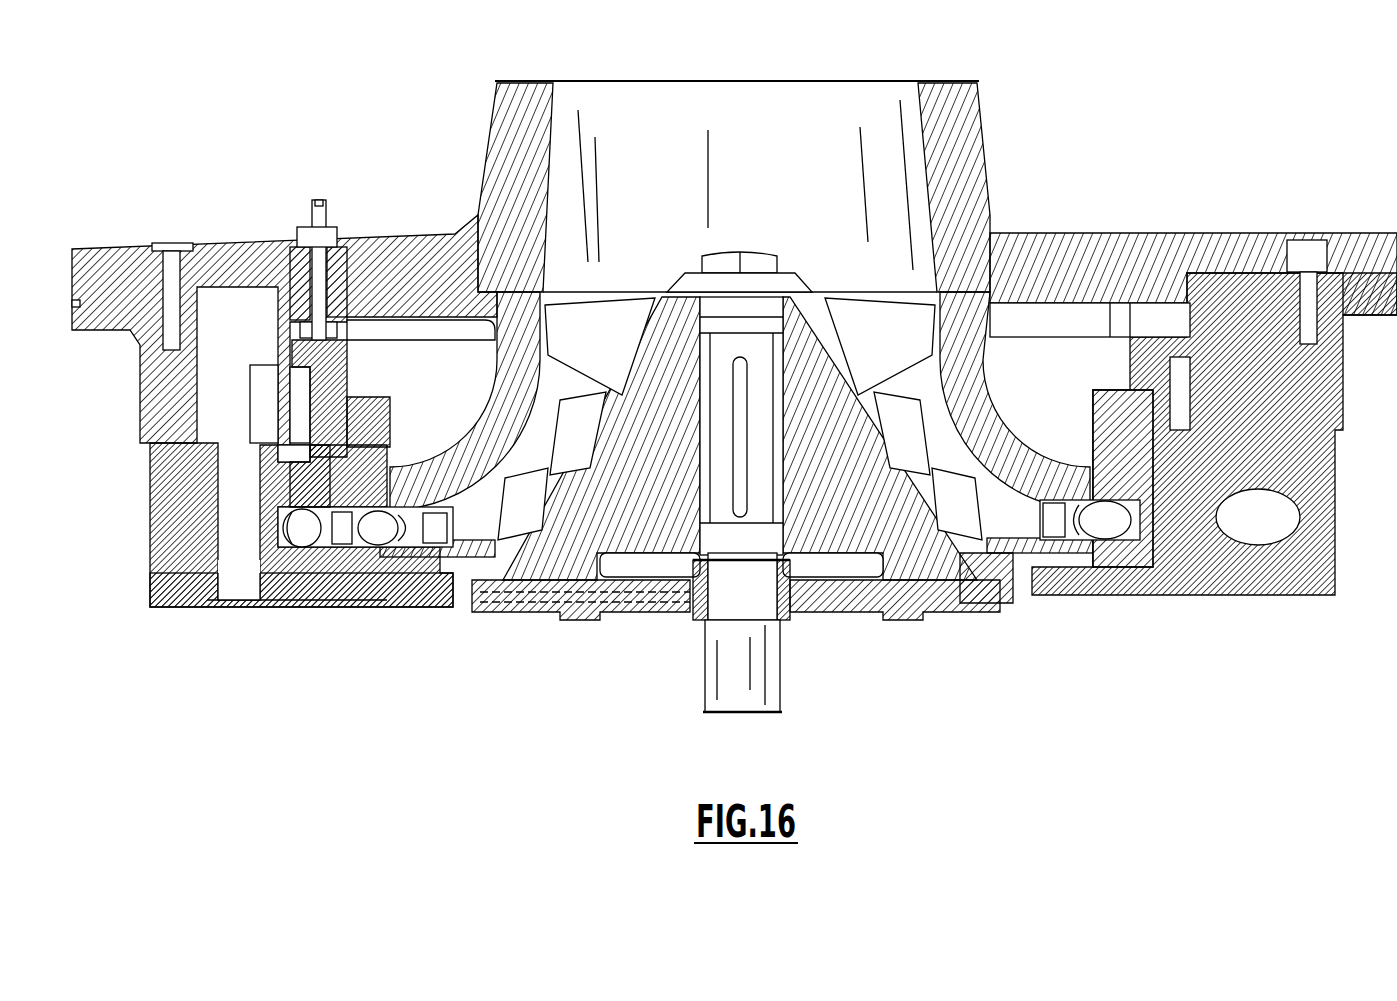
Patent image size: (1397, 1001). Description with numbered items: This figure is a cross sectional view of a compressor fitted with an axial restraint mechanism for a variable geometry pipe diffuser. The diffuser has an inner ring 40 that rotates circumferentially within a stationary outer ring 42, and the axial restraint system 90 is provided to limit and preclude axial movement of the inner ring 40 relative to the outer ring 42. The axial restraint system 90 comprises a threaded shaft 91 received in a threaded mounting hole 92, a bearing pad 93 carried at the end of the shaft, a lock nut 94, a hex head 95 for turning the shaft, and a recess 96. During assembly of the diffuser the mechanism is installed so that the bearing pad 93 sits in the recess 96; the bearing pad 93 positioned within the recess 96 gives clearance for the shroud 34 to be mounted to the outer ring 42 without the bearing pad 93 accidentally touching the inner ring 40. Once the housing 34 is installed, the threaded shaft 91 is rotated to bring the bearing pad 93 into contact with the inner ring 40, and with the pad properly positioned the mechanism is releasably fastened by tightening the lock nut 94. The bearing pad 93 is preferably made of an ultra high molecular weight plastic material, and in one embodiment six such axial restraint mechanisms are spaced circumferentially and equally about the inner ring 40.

The shroud 34 is at (990, 233).
The inner ring 40 is at (300, 467).
The outer ring 42 is at (290, 593).
The axial restraint system 90 is at (299, 239).
The threaded shaft 91 is at (318, 290).
The threaded mounting hole 92 is at (335, 258).
The bearing pad 93 is at (306, 337).
The lock nut 94 is at (300, 228).
The hex head 95 is at (322, 205).
The recess 96 is at (382, 330).